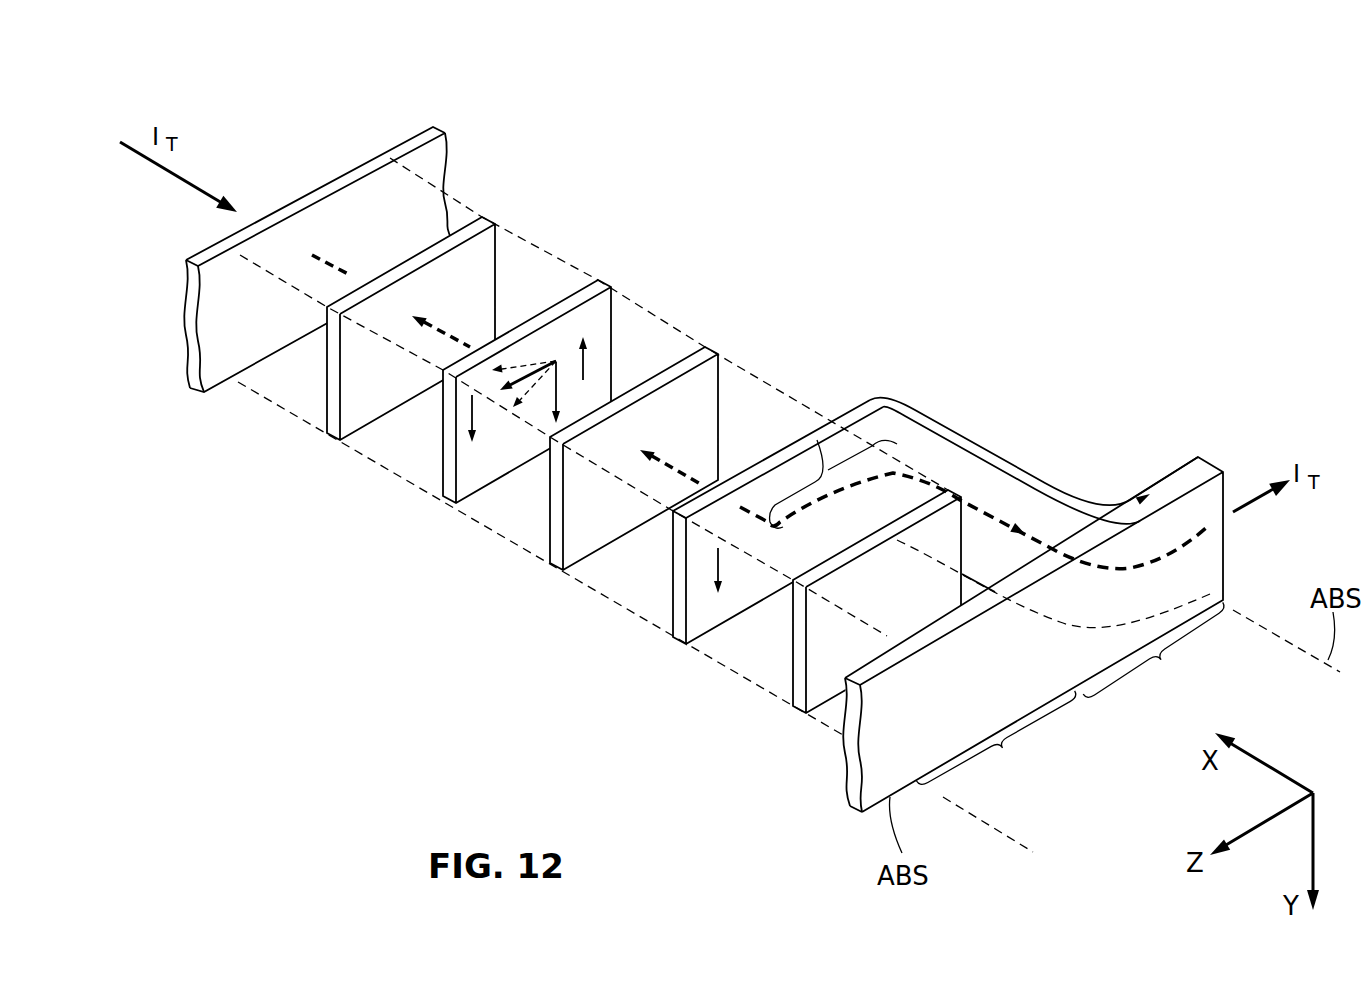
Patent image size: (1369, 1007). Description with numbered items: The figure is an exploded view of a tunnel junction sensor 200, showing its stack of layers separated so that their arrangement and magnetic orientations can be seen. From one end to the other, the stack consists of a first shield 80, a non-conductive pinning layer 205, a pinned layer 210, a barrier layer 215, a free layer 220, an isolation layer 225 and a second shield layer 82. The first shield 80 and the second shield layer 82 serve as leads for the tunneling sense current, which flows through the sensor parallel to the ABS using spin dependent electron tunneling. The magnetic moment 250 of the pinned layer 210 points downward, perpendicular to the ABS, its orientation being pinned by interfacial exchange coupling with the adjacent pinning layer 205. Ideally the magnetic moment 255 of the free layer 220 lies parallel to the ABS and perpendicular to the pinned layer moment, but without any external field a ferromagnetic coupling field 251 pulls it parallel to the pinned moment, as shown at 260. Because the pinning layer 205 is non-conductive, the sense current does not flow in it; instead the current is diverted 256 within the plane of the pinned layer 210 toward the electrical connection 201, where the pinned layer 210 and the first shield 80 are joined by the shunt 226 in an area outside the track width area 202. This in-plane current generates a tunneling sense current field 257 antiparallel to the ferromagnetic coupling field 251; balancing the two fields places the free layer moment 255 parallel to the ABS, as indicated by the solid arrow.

The first shield 80 is at (850, 780).
The second shield layer 82 is at (441, 129).
The tunnel junction sensor 200 is at (1133, 338).
The electrical connection 201 is at (1156, 654).
The track width area 202 is at (999, 743).
The non-conductive pinning layer 205 is at (792, 647).
The pinned layer 210 is at (675, 552).
The barrier layer 215 is at (550, 502).
The free layer 220 is at (588, 282).
The isolation layer 225 is at (333, 370).
The shunt 226 is at (1027, 460).
The magnetic moment (MP) of the pinned layer 250 is at (688, 552).
The ferromagnetic coupling field (HFC) 251 is at (470, 413).
The magnetic moment (MF) of the free layer 255 is at (527, 365).
The diverted tunnel current 256 is at (830, 468).
The tunneling sense current field (HI) 257 is at (583, 370).
The orientation of the free layer moment parallel to the pinned layer moment 260 is at (556, 388).